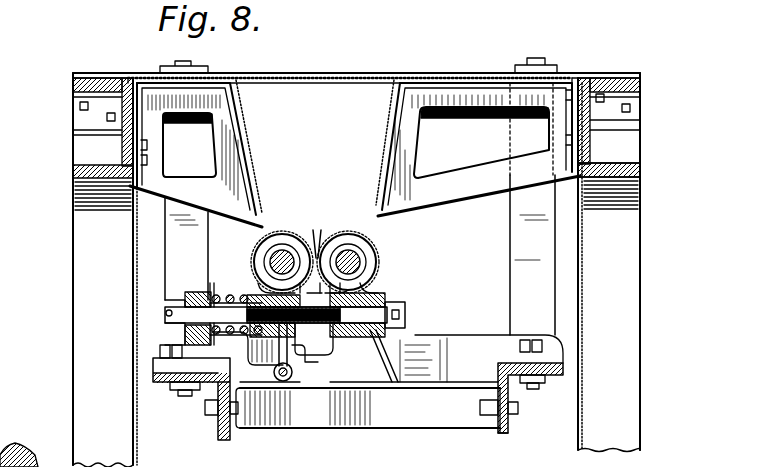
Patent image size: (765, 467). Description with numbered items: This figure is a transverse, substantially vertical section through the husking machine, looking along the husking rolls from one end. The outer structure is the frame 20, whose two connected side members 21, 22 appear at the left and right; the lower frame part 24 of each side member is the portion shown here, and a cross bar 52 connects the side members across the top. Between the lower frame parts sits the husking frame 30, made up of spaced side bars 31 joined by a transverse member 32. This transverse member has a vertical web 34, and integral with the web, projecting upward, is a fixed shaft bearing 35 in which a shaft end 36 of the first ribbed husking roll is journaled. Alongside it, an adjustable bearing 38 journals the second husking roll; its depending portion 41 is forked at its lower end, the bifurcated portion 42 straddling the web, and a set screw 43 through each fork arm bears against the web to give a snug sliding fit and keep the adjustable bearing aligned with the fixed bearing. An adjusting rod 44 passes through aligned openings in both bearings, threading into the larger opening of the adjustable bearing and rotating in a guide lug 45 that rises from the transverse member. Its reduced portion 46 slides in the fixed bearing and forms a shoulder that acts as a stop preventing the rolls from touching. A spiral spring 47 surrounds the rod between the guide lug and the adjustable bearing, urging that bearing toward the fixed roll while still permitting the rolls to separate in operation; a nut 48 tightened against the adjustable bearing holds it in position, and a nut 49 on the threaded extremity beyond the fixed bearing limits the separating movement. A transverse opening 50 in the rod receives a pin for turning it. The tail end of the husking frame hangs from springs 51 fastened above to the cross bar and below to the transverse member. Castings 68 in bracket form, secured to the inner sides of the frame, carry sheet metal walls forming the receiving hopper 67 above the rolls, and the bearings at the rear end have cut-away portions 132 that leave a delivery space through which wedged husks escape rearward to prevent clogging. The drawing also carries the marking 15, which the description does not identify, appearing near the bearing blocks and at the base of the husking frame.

The bearing block 15 is at (330, 300).
The frame 20 is at (638, 161).
The side member 21 is at (84, 326).
The side member 22 is at (628, 318).
The lower frame part 24 is at (74, 166).
The husking frame 30 is at (510, 427).
The side bar 31 is at (216, 394).
The transverse member 32 is at (368, 408).
The vertical web 34 is at (455, 334).
The fixed shaft bearing 35 is at (373, 281).
The shaft end 36 is at (362, 263).
The adjustable bearing 38 is at (262, 259).
The depending portion 41 is at (294, 353).
The bifurcated portion 42 is at (280, 350).
The set screw 43 is at (290, 379).
The adjusting rod 44 is at (233, 316).
The guide lug 45 is at (185, 298).
The reduced portion 46 is at (386, 353).
The spiral spring 47 is at (212, 290).
The nut 48 is at (305, 330).
The nut 49 is at (406, 306).
The transverse opening 50 is at (166, 314).
The spring 51 is at (180, 241).
The cross bar 52 is at (356, 84).
The receiving hopper 67 is at (385, 158).
The casting 68 is at (232, 172).
The cut-away portion 132 is at (324, 242).